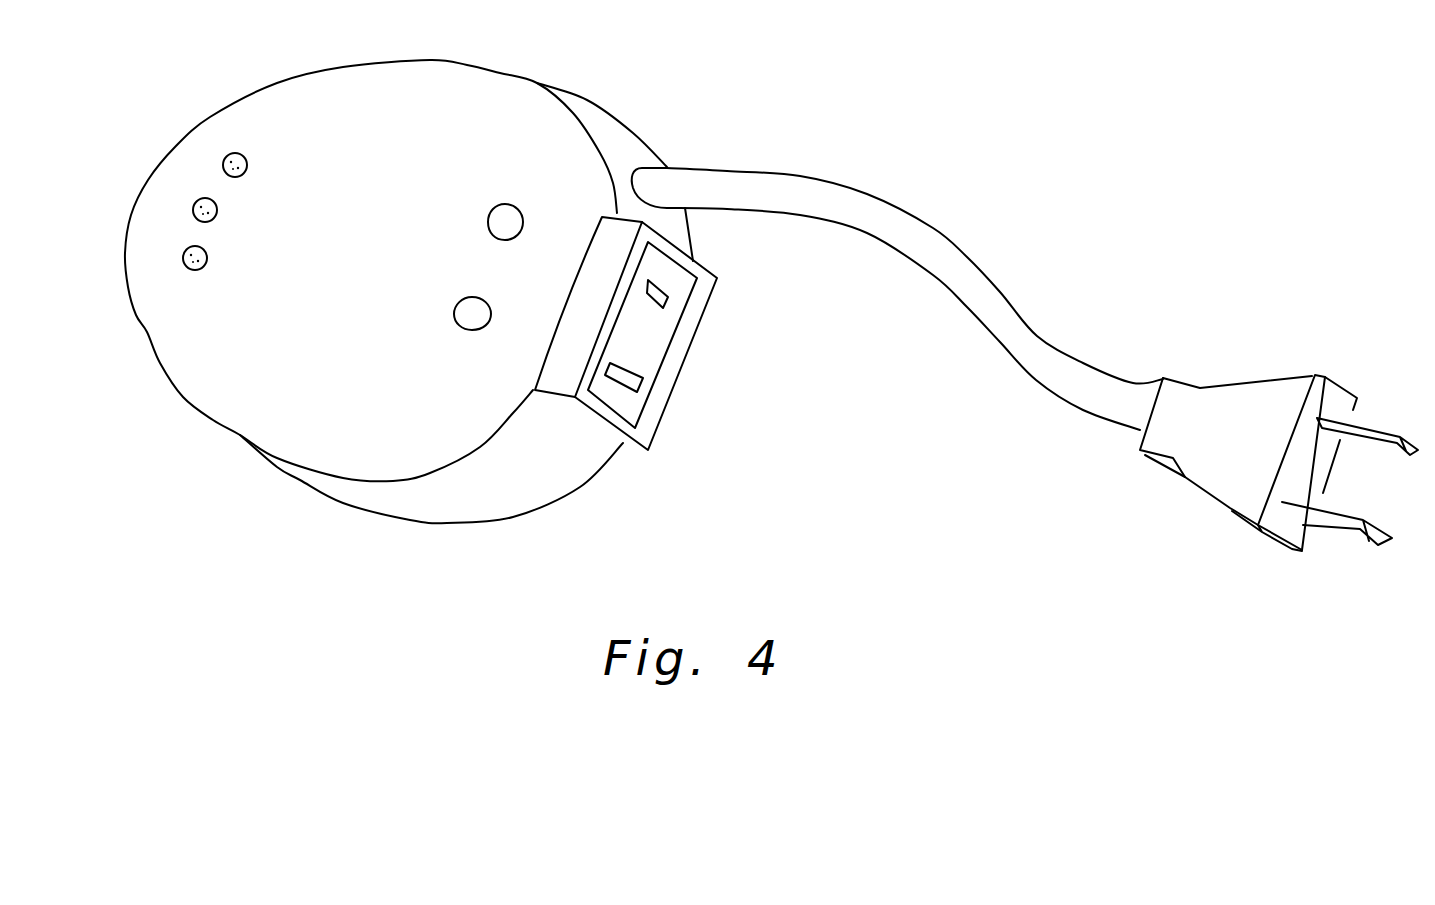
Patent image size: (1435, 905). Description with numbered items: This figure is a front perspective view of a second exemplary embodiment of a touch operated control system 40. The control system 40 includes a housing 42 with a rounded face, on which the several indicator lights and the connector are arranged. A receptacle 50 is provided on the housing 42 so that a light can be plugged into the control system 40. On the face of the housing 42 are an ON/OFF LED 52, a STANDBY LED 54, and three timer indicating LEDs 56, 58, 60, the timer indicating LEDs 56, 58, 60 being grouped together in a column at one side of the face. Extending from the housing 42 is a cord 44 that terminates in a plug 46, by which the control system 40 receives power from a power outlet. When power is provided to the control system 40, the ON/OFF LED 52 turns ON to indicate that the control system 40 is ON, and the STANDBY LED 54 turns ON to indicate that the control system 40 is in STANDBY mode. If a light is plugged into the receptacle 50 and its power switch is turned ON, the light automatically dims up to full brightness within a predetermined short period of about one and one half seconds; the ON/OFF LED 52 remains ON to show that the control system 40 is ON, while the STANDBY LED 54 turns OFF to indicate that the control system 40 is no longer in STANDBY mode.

The touch operated control system 40 is at (725, 458).
The housing 42 is at (530, 507).
The power cord 44 is at (947, 233).
The plug 46 is at (1273, 373).
The receptacle 50 is at (643, 333).
The ON/OFF LED 52 is at (505, 222).
The STANDBY LED 54 is at (468, 313).
The timer indicating LED 56 is at (243, 158).
The timer indicating LED 58 is at (215, 204).
The timer indicating LED 60 is at (205, 257).